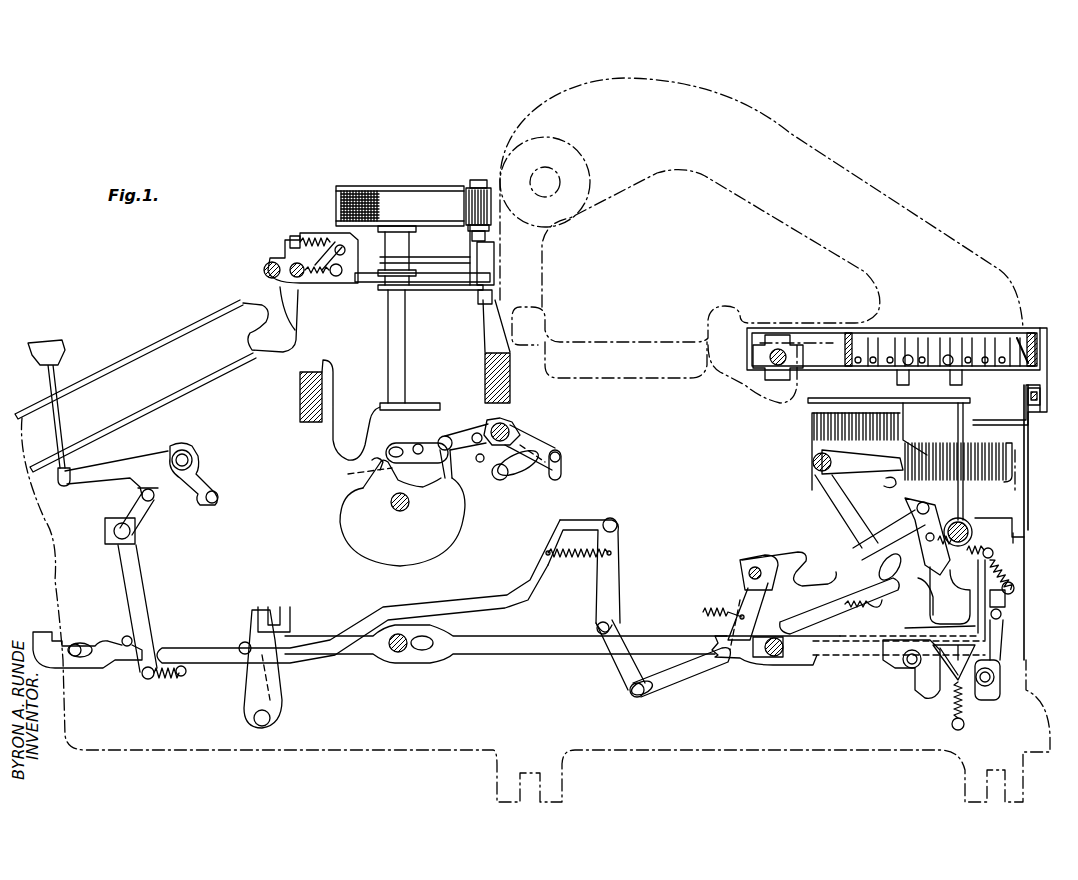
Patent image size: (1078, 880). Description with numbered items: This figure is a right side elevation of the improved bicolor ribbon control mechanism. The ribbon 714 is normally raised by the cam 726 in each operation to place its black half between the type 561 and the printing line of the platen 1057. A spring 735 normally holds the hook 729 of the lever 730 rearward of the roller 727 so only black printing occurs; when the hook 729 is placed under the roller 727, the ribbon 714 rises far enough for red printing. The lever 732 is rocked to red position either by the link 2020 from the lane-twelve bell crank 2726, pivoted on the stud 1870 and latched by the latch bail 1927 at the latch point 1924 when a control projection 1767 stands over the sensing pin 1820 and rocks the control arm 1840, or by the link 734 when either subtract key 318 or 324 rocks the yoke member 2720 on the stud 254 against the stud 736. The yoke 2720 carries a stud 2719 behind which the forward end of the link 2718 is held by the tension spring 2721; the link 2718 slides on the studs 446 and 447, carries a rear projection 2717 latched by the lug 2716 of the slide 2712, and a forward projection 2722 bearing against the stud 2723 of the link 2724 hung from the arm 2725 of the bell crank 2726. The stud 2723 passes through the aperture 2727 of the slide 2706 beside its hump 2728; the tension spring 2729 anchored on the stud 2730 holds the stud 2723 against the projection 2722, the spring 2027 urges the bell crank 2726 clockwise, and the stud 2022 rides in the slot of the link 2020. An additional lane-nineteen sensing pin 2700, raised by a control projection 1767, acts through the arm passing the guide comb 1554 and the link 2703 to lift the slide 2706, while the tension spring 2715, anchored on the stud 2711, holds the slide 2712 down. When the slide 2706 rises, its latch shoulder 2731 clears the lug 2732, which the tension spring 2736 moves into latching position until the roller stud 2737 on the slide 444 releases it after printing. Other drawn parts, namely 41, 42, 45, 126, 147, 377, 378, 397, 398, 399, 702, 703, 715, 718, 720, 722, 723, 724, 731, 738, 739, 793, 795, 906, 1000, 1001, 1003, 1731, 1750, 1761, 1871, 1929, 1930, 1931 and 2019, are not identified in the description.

The brush 41 is at (298, 400).
The brush 42 is at (510, 392).
The frame plate 45 is at (1024, 470).
The cam shaft 126 is at (400, 511).
The pivot stud 147 is at (507, 437).
The stud 254 is at (131, 540).
The subtract key 318 is at (40, 345).
The subtract key 324 is at (60, 343).
The lever pivot 377 is at (193, 460).
The stud 378 is at (218, 497).
The link end 397 is at (65, 482).
The link 398 is at (105, 473).
The lever 399 is at (195, 478).
The slide 444 is at (893, 660).
The stud 446 is at (398, 655).
The stud 447 is at (774, 658).
The type 561 is at (488, 300).
The hub 702 is at (390, 405).
The rods 703 is at (392, 340).
The ribbon 714 is at (447, 195).
The auxiliary coil 715 is at (488, 180).
The bracket 718 is at (495, 260).
The lever pivot 720 is at (433, 440).
The follower 722 is at (390, 482).
The link 723 is at (446, 462).
The slotted link 724 is at (356, 473).
The cam 726 is at (352, 538).
The roller 727 is at (498, 482).
The red ribbon hook 729 is at (530, 480).
The lever 730 is at (541, 449).
The pivot 731 is at (563, 458).
The lever 732 is at (586, 503).
The link 734 is at (167, 647).
The spring 735 is at (575, 560).
The stud 736 is at (124, 636).
The link 738 is at (153, 501).
The pivot 739 is at (141, 495).
The pivot 793 is at (597, 629).
The pivot 795 is at (272, 720).
The lever 906 is at (90, 632).
The fork 1000 is at (284, 617).
The lever 1001 is at (275, 684).
The pivot 1003 is at (258, 638).
The platen 1057 is at (590, 167).
The guide comb 1554 is at (1027, 528).
The end plate 1731 is at (1030, 328).
The carriage rack 1750 is at (878, 352).
The stop 1761 is at (1031, 424).
The control projection 1767 is at (955, 352).
The sensing pin 1820 is at (906, 397).
The control arm 1840 is at (901, 466).
The stud 1870 is at (813, 462).
The hook 1871 is at (888, 485).
The latch point 1924 is at (798, 578).
The latch bail 1927 is at (787, 560).
The pivot 1929 is at (749, 575).
The spring 1930 is at (702, 625).
The arm 1931 is at (748, 599).
The lever 2019 is at (845, 574).
The link 2020 is at (707, 662).
The stud 2022 is at (634, 698).
The spring 2027 is at (852, 615).
The sensing pin 2700 is at (963, 400).
The link 2703 is at (965, 518).
The slide 2706 is at (972, 524).
The stud 2711 is at (958, 731).
The slide 2712 is at (948, 690).
The tension spring 2715 is at (955, 722).
The lug 2716 is at (1005, 646).
The projection 2717 is at (1005, 631).
The link 2718 is at (510, 656).
The stud 2719 is at (142, 677).
The yoke member 2720 is at (140, 597).
The tension spring 2721 is at (168, 686).
The projection 2722 is at (915, 646).
The stud 2723 is at (872, 605).
The link 2724 is at (942, 510).
The arm 2725 is at (918, 523).
The bell crank 2726 is at (815, 483).
The aperture 2727 is at (893, 565).
The hump 2728 is at (925, 618).
The tension spring 2729 is at (1012, 554).
The stud 2730 is at (1012, 570).
The latch shoulder 2731 is at (1012, 603).
The latch lug 2732 is at (1010, 617).
The tension spring 2736 is at (1016, 590).
The roller stud 2737 is at (905, 692).